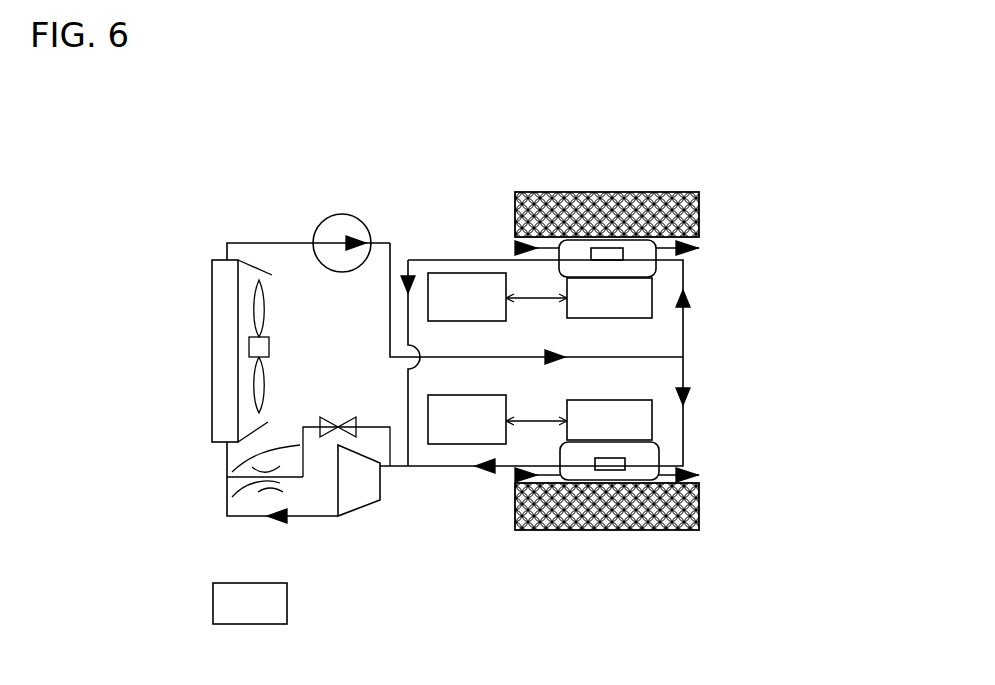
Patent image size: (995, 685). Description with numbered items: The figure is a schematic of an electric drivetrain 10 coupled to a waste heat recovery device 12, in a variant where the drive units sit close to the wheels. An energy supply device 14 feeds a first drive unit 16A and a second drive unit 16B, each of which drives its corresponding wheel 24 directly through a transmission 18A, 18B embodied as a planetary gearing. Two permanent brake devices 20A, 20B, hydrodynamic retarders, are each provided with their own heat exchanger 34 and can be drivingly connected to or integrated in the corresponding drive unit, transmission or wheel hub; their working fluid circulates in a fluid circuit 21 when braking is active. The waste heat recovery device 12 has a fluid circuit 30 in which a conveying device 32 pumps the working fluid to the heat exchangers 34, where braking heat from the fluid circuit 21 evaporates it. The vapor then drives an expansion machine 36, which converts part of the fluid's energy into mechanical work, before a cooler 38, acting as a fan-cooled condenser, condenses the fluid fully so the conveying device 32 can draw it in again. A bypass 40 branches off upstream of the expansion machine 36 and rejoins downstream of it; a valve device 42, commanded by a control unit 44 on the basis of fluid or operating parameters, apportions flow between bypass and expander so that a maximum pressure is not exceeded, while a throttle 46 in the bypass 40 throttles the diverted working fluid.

The electric drivetrain 10 is at (714, 254).
The waste heat recovery device 12 is at (416, 550).
The energy supply device 14 is at (473, 273).
The first drive unit 16A is at (652, 310).
The second drive unit 16B is at (653, 432).
The transmission 18A is at (701, 277).
The permanent brake device 20A is at (657, 267).
The transmission 18B is at (703, 450).
The permanent brake device 20B is at (658, 458).
The fluid circuit 21 is at (513, 245).
The wheels 24 is at (590, 192).
The fluid circuit 30 is at (287, 243).
The conveying device 32 is at (343, 216).
The heat exchanger 34 is at (623, 250).
The expansion machine 36 is at (353, 517).
The cooler 38 is at (212, 350).
The bypass 40 is at (250, 455).
The valve device 42 is at (345, 417).
The control unit 44 is at (287, 603).
The throttle 46 is at (248, 487).